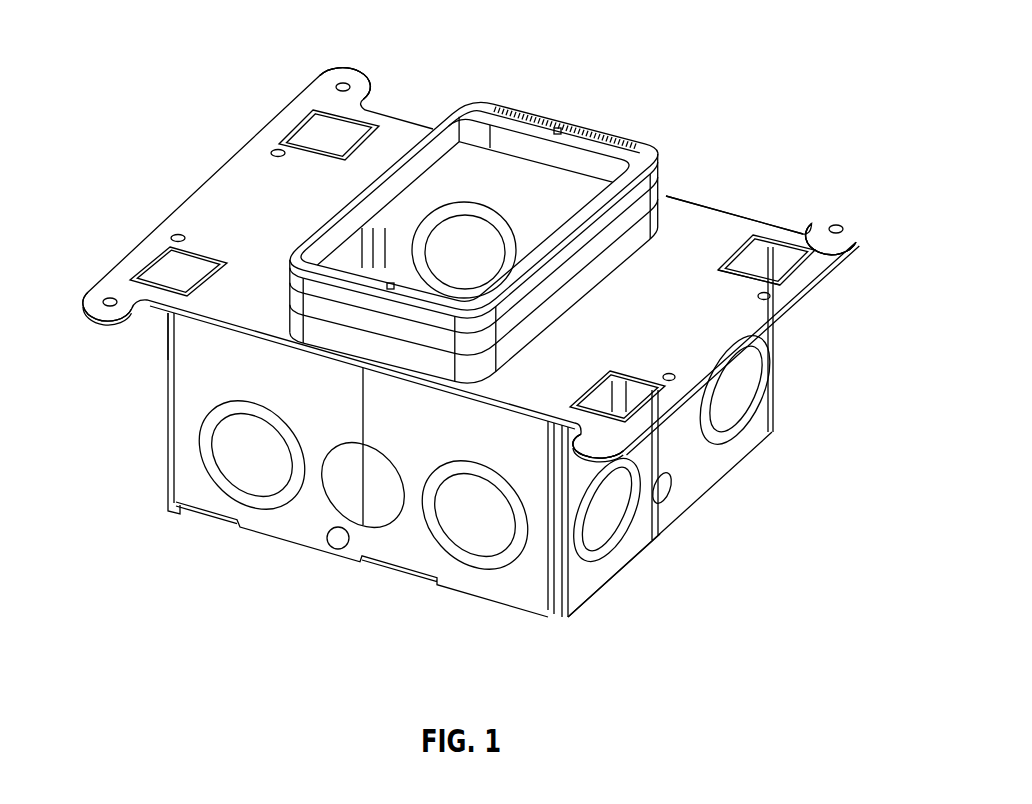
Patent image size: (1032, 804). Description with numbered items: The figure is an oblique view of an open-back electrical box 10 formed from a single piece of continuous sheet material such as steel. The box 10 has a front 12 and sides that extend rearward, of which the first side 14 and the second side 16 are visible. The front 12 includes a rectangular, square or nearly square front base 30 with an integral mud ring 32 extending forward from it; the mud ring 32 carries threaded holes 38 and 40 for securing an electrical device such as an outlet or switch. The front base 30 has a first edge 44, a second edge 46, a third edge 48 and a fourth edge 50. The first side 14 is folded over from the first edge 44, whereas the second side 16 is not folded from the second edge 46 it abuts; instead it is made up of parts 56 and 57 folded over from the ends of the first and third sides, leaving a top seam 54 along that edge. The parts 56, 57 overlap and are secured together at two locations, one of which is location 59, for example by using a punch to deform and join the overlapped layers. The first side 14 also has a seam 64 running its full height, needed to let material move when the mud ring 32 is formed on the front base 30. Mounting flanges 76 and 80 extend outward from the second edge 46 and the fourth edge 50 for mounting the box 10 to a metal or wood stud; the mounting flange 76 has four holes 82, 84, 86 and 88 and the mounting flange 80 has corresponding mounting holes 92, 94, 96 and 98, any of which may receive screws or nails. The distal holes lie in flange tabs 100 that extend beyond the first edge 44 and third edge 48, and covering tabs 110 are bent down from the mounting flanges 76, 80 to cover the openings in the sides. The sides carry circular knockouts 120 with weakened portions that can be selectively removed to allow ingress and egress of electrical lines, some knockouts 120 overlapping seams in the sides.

The electrical box 10 is at (106, 259).
The front 12 is at (545, 90).
The first side 14 is at (207, 370).
The second side 16 is at (720, 460).
The front base 30 is at (722, 208).
The mud ring 32 is at (490, 104).
The threaded hole 38 is at (391, 289).
The threaded hole 40 is at (565, 127).
The first edge 44 is at (223, 330).
The second edge 46 is at (762, 274).
The third edge 48 is at (700, 180).
The fourth edge 50 is at (330, 122).
The top seam 54 is at (606, 408).
The part 56 is at (632, 543).
The part 57 is at (773, 425).
The location 59 is at (672, 533).
The seam 64 is at (366, 412).
The mounting flange 76 is at (805, 220).
The mounting flange 80 is at (314, 76).
The hole 82 is at (841, 229).
The hole 84 is at (762, 286).
The hole 86 is at (710, 414).
The hole 88 is at (598, 450).
The mounting hole 92 is at (352, 89).
The mounting hole 94 is at (263, 150).
The mounting hole 96 is at (170, 237).
The mounting hole 98 is at (103, 300).
The flange tab 100 is at (350, 70).
The covering tab 110 is at (771, 294).
The knockout 120 is at (467, 258).